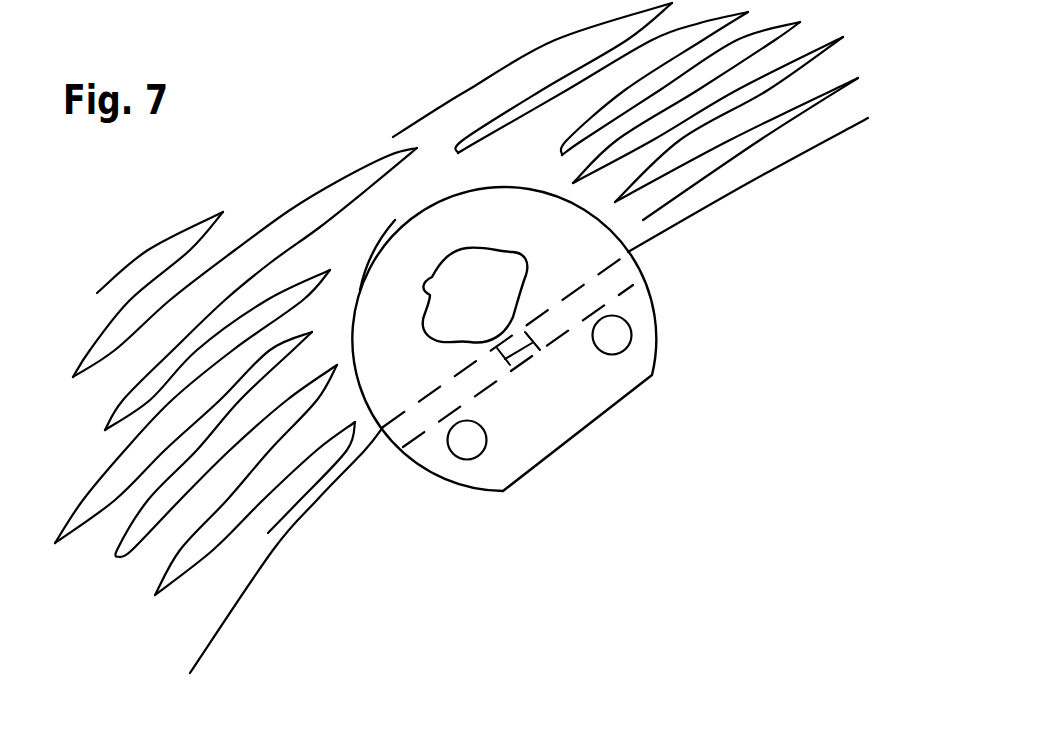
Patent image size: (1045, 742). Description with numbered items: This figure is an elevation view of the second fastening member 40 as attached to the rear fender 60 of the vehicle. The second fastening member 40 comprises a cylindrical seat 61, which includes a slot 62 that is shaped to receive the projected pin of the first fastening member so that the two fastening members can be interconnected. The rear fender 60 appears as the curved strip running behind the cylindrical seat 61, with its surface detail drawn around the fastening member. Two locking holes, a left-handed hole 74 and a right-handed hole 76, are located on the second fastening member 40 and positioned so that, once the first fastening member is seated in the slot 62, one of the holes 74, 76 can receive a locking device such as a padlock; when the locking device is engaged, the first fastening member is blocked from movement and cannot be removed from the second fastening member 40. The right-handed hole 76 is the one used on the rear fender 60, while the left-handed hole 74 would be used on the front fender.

The second fastening member 40 is at (593, 418).
The rear fender 60 is at (757, 155).
The cylindrical seat 61 is at (416, 220).
The slot 62 is at (463, 272).
The left-handed hole 74 is at (614, 335).
The right-handed hole 76 is at (467, 440).